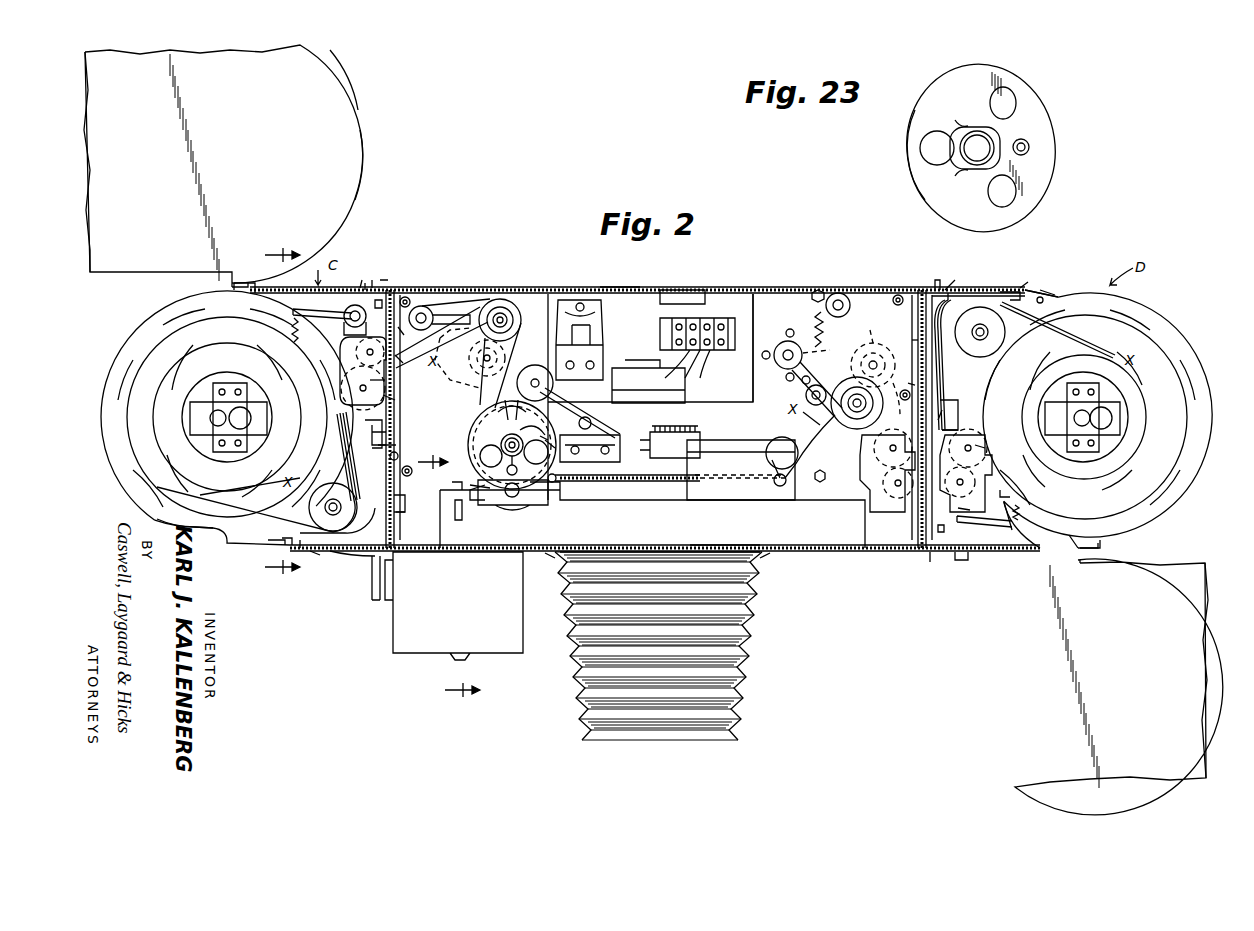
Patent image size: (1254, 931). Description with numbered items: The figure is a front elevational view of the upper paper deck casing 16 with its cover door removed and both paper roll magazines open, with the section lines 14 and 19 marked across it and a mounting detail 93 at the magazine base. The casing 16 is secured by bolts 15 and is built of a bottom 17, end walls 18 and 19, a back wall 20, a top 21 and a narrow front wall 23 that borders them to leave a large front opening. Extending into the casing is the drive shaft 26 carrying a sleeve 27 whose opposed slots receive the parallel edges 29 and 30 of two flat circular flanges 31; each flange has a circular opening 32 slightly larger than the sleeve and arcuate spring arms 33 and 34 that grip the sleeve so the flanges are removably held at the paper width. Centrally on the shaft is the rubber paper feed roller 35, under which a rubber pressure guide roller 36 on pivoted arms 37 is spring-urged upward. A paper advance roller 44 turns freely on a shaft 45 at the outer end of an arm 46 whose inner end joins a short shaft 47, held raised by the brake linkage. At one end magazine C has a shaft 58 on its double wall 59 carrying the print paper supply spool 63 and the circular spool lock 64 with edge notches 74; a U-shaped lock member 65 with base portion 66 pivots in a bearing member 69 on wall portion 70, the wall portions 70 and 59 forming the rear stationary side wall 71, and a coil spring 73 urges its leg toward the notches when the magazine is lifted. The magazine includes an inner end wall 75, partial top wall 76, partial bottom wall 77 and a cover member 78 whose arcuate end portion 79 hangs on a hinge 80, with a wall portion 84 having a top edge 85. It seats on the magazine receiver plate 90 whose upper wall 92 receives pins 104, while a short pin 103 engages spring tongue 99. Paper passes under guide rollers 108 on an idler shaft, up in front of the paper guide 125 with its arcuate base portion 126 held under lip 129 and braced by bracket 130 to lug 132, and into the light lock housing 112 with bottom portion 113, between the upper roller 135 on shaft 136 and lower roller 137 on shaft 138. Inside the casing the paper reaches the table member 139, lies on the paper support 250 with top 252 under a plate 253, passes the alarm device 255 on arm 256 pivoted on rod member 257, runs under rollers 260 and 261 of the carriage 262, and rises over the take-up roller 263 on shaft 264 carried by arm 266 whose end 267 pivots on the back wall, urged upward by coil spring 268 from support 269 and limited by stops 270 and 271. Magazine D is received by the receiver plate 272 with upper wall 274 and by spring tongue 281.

In FIG. 2, the section line 14 is at (284, 414).
In FIG. 2, the bolts 15 is at (406, 296).
In FIG. 2, the casing 16 is at (770, 285).
In FIG. 2, the bottom 17 is at (738, 546).
In FIG. 2, the end wall 18 is at (396, 436).
In FIG. 2, the end wall 19 is at (930, 520).
In FIG. 2, the back wall 20 is at (670, 453).
In FIG. 2, the top 21 is at (610, 288).
In FIG. 2, the narrow front wall 23 is at (690, 546).
In FIG. 2, the drive shaft 26 is at (512, 445).
In FIG. 2, the sleeve 27 is at (500, 442).
In FIG. 2, the edge 29 is at (538, 425).
In FIG. 23, the edge 29 is at (968, 138).
In FIG. 23, the edge 30 is at (975, 160).
In FIG. 2, the flange 31 is at (545, 437).
In FIG. 23, the flange 31 is at (937, 202).
In FIG. 2, the circular opening 32 is at (510, 425).
In FIG. 23, the circular opening 32 is at (928, 155).
In FIG. 2, the arcuate spring arm 33 is at (524, 459).
In FIG. 23, the arcuate spring arm 33 is at (960, 121).
In FIG. 2, the arcuate spring arm 34 is at (495, 430).
In FIG. 2, the rubber paper feed roller 35 is at (535, 393).
In FIG. 2, the rubber pressure guide roller 36 is at (522, 500).
In FIG. 2, the arms 37 is at (505, 505).
In FIG. 2, the paper advance roller 44 is at (505, 310).
In FIG. 2, the shaft 45 is at (500, 308).
In FIG. 2, the arm 46 is at (445, 310).
In FIG. 2, the short shaft 47 is at (425, 305).
In FIG. 2, the shaft 58 is at (212, 412).
In FIG. 2, the double wall 59 is at (258, 530).
In FIG. 2, the print paper supply spool 63 is at (222, 388).
In FIG. 2, the circular spool lock 64 is at (300, 358).
In FIG. 2, the U-shaped lock member 65 is at (328, 306).
In FIG. 2, the base portion 66 is at (348, 330).
In FIG. 2, the bearing member 69 is at (362, 288).
In FIG. 2, the wall portion 70 is at (332, 354).
In FIG. 2, the rear stationary side wall 71 is at (180, 305).
In FIG. 2, the coil spring 73 is at (292, 312).
In FIG. 2, the notches 74 is at (158, 345).
In FIG. 2, the inner end wall 75 is at (364, 450).
In FIG. 2, the partial top wall 76 is at (355, 285).
In FIG. 2, the partial bottom wall 77 is at (305, 550).
In FIG. 2, the cover member 78 is at (350, 98).
In FIG. 2, the arcuate end portion 79 is at (362, 152).
In FIG. 2, the hinge 80 is at (232, 285).
In FIG. 2, the wall portion 84 is at (1113, 660).
In FIG. 2, the top edge 85 is at (110, 272).
In FIG. 2, the magazine receiver plate 90 is at (396, 456).
In FIG. 2, the upper wall 92 is at (370, 285).
In FIG. 2, the bracket 93 is at (330, 556).
In FIG. 2, the spring tongue 99 is at (355, 560).
In FIG. 2, the short pin 103 is at (372, 585).
In FIG. 2, the pins 104 is at (388, 278).
In FIG. 2, the paper guide roller 108 is at (335, 490).
In FIG. 2, the light lock housing 112 is at (350, 350).
In FIG. 2, the bottom portion 113 is at (342, 415).
In FIG. 2, the paper guide 125 is at (392, 500).
In FIG. 2, the arcuate base portion 126 is at (410, 515).
In FIG. 2, the lip 129 is at (285, 545).
In FIG. 2, the bracket 130 is at (410, 445).
In FIG. 2, the lug 132 is at (395, 413).
In FIG. 2, the upper roller 135 is at (400, 325).
In FIG. 2, the shaft 136 is at (398, 362).
In FIG. 2, the lower roller 137 is at (398, 400).
In FIG. 2, the shaft 138 is at (395, 390).
In FIG. 2, the table member 139 is at (665, 525).
In FIG. 2, the paper support 250 is at (695, 495).
In FIG. 2, the top 252 is at (556, 478).
In FIG. 2, the plate 253 is at (630, 483).
In FIG. 2, the alarm device 255 is at (626, 440).
In FIG. 2, the arm 256 is at (592, 424).
In FIG. 2, the rod member 257 is at (560, 383).
In FIG. 2, the roller 260 is at (786, 440).
In FIG. 2, the roller 261 is at (518, 448).
In FIG. 2, the carriage 262 is at (775, 503).
In FIG. 2, the take-up roller 263 is at (850, 452).
In FIG. 2, the shaft 264 is at (850, 415).
In FIG. 2, the arm 266 is at (812, 378).
In FIG. 2, the end 267 is at (785, 342).
In FIG. 2, the coil spring 268 is at (812, 318).
In FIG. 2, the support 269 is at (820, 288).
In FIG. 2, the stop 270 is at (842, 297).
In FIG. 2, the stop 271 is at (806, 396).
In FIG. 2, the magazine receiver plate 272 is at (911, 343).
In FIG. 2, the upper wall 274 is at (948, 290).
In FIG. 2, the spring tongue 281 is at (960, 562).